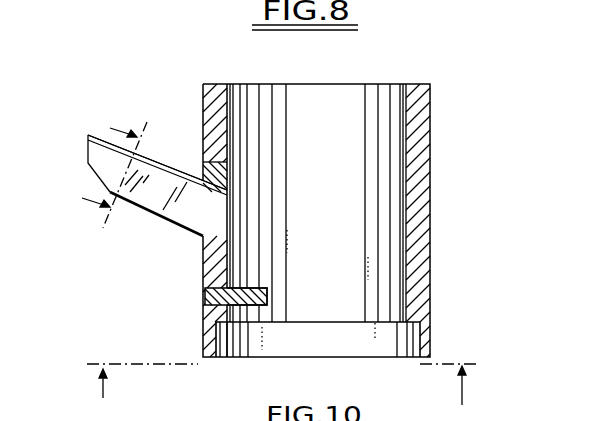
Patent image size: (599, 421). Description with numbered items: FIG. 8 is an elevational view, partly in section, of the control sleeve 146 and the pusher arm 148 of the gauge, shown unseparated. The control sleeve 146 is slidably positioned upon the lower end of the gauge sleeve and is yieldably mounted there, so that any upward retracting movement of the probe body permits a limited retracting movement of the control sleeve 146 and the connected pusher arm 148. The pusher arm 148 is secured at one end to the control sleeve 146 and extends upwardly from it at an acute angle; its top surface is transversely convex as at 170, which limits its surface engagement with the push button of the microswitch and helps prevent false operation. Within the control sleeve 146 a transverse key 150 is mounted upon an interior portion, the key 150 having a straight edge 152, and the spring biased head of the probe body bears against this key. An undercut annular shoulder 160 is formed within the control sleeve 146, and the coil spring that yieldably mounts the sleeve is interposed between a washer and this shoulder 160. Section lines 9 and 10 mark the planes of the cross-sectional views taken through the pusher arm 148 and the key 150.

The control sleeve 146 is at (425, 260).
The pusher arm 148 is at (187, 213).
The transversely convex top surface 170 is at (167, 160).
The key 150 is at (253, 289).
The straight edge 152 is at (268, 296).
The undercut annular shoulder 160 is at (220, 323).
The section line 9- 9 is at (111, 165).
The section line 10- 10 is at (286, 392).